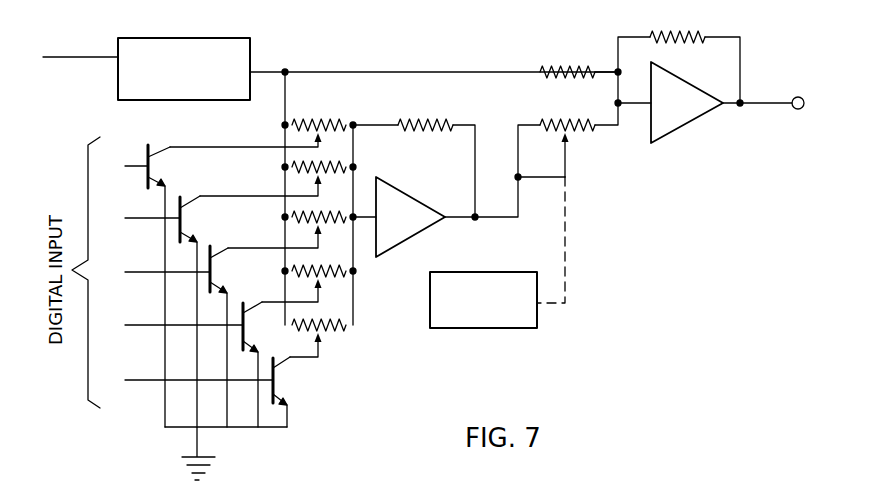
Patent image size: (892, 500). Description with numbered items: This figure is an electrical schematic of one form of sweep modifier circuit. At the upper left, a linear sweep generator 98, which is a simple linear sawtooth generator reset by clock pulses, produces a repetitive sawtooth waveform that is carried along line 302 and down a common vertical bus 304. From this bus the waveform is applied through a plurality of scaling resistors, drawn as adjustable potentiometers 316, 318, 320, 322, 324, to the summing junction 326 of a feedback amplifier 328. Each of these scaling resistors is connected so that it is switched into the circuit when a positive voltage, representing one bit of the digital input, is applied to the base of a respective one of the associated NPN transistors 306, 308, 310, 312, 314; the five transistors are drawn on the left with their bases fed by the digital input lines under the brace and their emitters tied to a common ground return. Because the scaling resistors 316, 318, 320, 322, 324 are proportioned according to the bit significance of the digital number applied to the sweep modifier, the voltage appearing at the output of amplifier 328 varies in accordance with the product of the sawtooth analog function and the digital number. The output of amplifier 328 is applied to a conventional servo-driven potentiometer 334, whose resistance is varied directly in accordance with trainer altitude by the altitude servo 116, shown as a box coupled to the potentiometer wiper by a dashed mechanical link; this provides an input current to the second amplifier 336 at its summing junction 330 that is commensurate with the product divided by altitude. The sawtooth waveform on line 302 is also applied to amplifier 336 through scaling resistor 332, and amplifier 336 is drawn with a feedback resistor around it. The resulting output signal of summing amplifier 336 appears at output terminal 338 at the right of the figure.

The linear sweep generator 98 is at (250, 42).
The line 302 is at (398, 72).
The common bus line 304 is at (283, 96).
The NPN transistor 306 is at (157, 176).
The NPN transistor 308 is at (187, 236).
The NPN transistor 310 is at (217, 287).
The NPN transistor 312 is at (249, 344).
The NPN transistor 314 is at (280, 396).
The potentiometer 316 is at (320, 117).
The potentiometer 318 is at (297, 167).
The potentiometer 320 is at (298, 214).
The potentiometer 322 is at (298, 268).
The potentiometer 324 is at (338, 328).
The summing junction 326 is at (355, 221).
The feedback amplifier 328 is at (434, 200).
The summing junction 330 is at (615, 102).
The scaling resistor 332 is at (590, 52).
The servo-driven potentiometer 334 is at (572, 130).
The summing amplifier 336 is at (678, 132).
The output terminal 338 is at (798, 96).
The altitude servo 116 is at (502, 328).